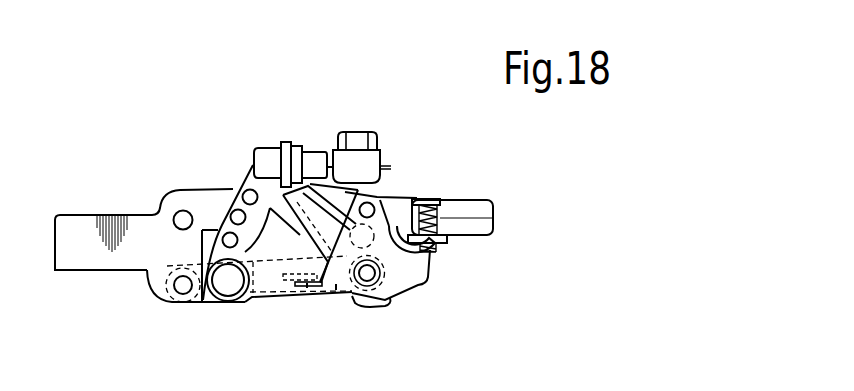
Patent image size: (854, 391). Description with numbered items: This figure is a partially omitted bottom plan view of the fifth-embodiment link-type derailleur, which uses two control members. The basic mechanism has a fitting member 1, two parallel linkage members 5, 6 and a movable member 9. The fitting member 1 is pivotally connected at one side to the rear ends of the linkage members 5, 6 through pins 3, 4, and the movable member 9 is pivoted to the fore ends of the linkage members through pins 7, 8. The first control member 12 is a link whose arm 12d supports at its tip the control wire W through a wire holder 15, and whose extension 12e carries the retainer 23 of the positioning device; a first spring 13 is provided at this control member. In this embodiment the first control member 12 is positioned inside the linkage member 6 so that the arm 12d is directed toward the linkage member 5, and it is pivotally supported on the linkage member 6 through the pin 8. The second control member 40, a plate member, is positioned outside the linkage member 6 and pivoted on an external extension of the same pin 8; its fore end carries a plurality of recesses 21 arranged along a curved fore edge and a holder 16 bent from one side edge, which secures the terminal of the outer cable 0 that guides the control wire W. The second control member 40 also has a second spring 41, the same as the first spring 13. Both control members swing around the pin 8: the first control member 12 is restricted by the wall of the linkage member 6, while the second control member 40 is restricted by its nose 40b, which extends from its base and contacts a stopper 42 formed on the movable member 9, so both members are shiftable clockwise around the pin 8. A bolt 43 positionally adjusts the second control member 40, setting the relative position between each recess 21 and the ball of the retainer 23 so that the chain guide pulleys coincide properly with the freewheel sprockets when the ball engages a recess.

The fitting member 1 is at (70, 213).
The pin 3 is at (176, 212).
The pin 4 is at (181, 294).
The linkage member 5 is at (187, 190).
The linkage member 6 is at (336, 284).
The pin 7 is at (375, 203).
The pin 8 is at (367, 275).
The movable member 9 is at (478, 204).
The outer cable 0 is at (260, 152).
The first control member 12 is at (285, 283).
The arm 12d is at (346, 190).
The extension 12e is at (254, 281).
The first spring 13 is at (307, 283).
The wire holder 15 is at (358, 132).
The holder 16 is at (290, 142).
The recesses 21 is at (244, 202).
The retainer 23 is at (230, 290).
The second control member 40 is at (238, 178).
The nose 40b is at (412, 282).
The second spring 41 is at (420, 198).
The stopper 42 is at (448, 240).
The bolt 43 is at (442, 219).
The control wire W is at (393, 164).